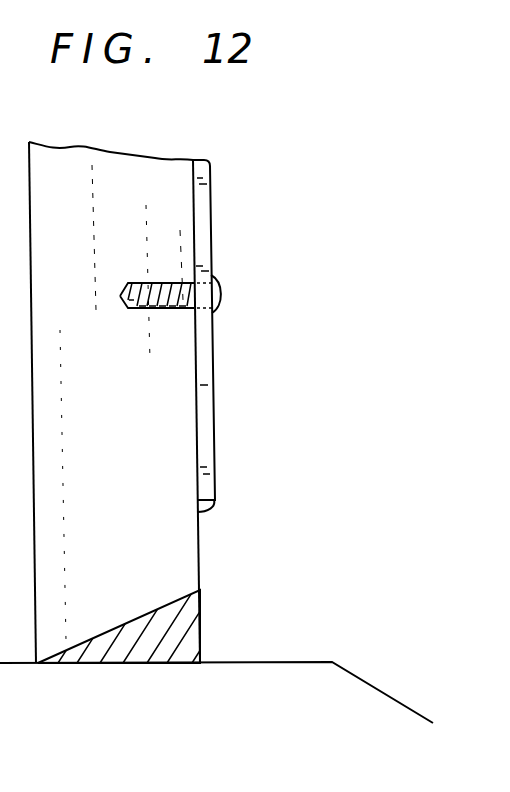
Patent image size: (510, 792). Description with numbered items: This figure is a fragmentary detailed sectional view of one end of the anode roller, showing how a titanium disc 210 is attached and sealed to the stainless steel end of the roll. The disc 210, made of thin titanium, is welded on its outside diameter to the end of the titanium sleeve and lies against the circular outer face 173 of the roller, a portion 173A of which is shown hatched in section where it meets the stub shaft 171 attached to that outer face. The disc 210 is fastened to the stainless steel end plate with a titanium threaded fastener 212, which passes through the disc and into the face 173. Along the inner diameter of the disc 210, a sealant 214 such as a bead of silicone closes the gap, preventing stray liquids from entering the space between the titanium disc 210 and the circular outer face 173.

The circular outer face 173 is at (135, 388).
The wedge portion of board 173A is at (200, 634).
The titanium disc 210 is at (212, 238).
The titanium threaded fastener 212 is at (222, 297).
The sealant 214 is at (210, 503).
The stub shaft 171 is at (360, 680).